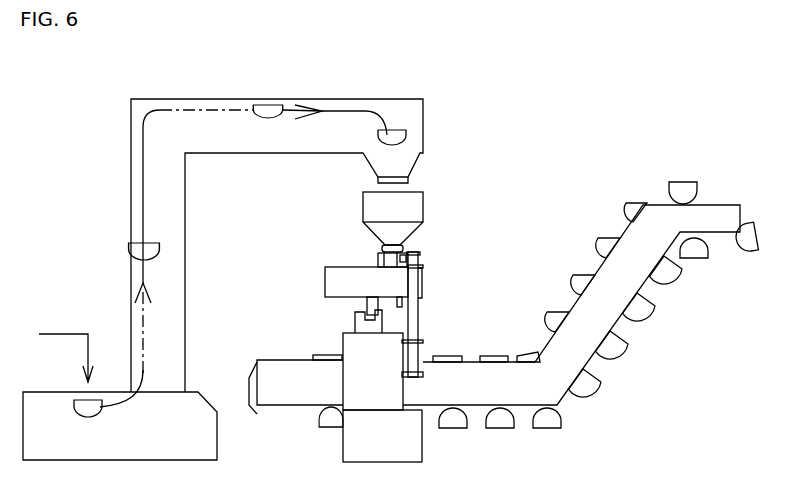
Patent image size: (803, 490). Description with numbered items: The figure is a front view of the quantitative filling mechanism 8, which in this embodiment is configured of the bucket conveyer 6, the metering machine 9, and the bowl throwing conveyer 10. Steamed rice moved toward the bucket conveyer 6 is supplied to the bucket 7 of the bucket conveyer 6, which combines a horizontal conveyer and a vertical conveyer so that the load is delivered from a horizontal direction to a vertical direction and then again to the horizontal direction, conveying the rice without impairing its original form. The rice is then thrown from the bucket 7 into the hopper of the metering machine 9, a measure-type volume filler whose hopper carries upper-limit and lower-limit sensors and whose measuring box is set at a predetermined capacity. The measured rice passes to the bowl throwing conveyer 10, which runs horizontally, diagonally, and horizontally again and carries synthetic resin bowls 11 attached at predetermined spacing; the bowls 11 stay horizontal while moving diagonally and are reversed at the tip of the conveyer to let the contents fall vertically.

The bucket conveyer 6 is at (120, 165).
The bucket 7 is at (263, 104).
The quantitative filling mechanism 8 is at (514, 153).
The metering machine 9 is at (439, 213).
The bowl throwing conveyer 10 is at (552, 278).
The bowl 11 is at (682, 188).